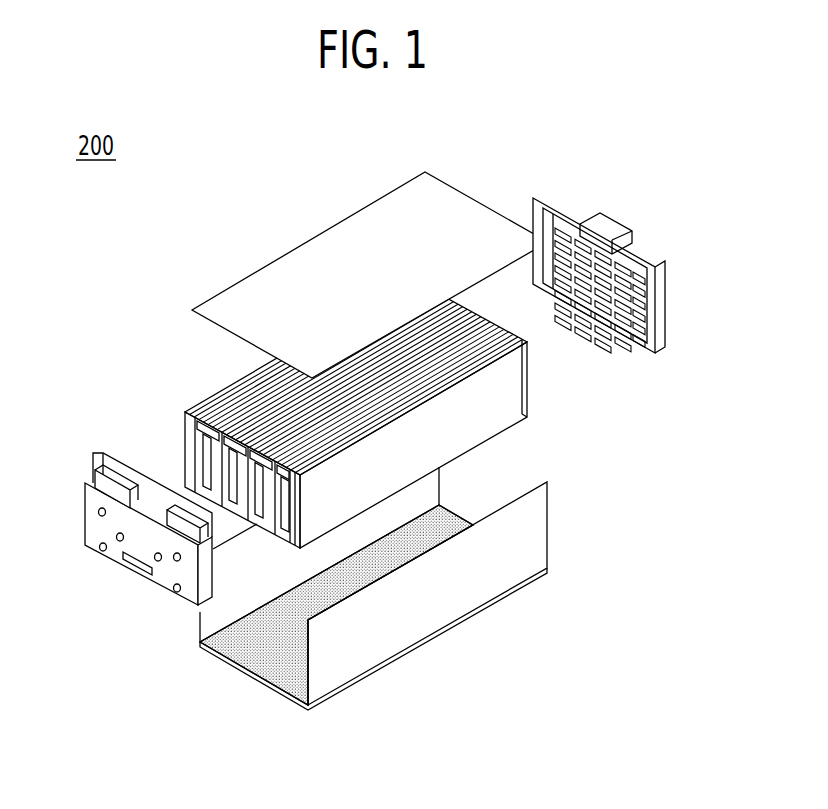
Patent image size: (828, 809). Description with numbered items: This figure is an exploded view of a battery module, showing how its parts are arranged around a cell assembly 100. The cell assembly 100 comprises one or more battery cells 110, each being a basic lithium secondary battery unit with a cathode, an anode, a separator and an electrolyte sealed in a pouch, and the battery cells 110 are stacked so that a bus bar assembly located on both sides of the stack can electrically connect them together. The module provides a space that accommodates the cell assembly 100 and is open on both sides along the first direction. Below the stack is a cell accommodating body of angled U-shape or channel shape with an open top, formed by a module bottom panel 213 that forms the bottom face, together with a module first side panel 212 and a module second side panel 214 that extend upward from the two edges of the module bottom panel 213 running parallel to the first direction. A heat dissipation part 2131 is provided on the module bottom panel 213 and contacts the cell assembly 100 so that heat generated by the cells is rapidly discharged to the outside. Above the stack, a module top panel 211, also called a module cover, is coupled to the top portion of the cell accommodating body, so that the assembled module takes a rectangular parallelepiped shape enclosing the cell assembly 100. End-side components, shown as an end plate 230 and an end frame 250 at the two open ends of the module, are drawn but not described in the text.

The cell assembly 100 is at (200, 371).
The battery cells 110 is at (457, 366).
The module top panel 211 is at (332, 250).
The module first side panel 212 is at (412, 630).
The module bottom panel 213 is at (217, 650).
The heat dissipation part 2131 is at (268, 662).
The module second side panel 214 is at (393, 515).
The end plate 230 is at (137, 547).
The end frame 250 is at (590, 227).